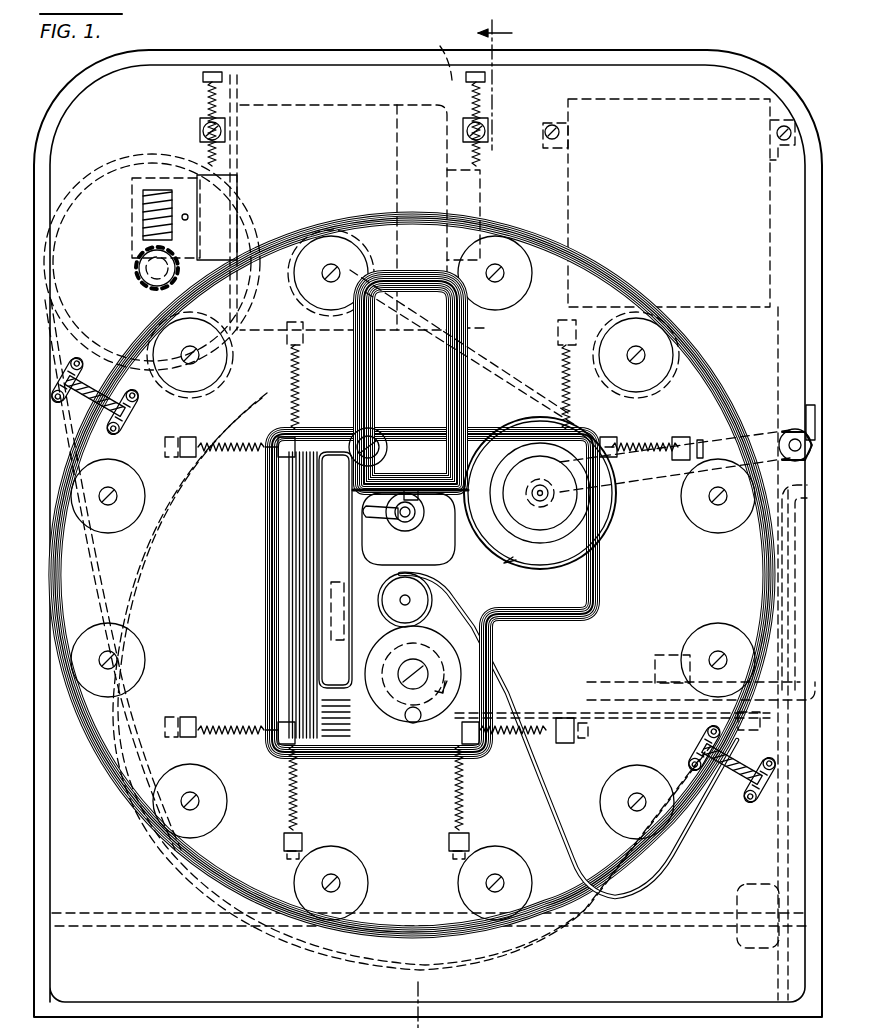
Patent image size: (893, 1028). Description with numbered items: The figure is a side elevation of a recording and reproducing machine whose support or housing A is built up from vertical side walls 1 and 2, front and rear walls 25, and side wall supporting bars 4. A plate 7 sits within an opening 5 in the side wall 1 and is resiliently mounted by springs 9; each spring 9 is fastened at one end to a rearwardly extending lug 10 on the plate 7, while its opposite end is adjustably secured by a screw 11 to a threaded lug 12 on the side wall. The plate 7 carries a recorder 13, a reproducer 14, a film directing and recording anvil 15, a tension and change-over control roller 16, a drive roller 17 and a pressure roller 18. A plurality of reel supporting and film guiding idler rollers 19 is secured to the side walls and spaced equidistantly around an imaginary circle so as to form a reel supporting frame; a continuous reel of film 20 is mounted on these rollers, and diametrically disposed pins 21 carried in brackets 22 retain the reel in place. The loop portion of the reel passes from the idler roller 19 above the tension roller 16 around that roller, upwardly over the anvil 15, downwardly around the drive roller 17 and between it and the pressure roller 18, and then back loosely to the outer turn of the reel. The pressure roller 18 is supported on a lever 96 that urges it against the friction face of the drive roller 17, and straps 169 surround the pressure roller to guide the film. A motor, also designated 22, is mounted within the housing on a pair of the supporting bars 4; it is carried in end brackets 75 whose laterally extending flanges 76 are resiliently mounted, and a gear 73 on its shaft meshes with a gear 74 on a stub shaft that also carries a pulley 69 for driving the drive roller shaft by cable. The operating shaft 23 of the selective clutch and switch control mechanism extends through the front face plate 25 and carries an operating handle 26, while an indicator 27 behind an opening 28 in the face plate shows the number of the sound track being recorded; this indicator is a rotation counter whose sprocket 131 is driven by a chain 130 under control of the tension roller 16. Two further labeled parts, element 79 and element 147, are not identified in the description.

The vertical side wall 1 is at (735, 92).
The screw 147 is at (770, 108).
The vertical side wall 2 is at (473, 524).
The side wall supporting bar 4 is at (203, 131).
The opening 5 is at (468, 340).
The plate 7 is at (540, 605).
The spring 9 is at (290, 382).
The rearwardly extending lug 10 is at (278, 436).
The screw 11 is at (468, 848).
The threaded lug 12 is at (470, 832).
The recorder 13 is at (384, 448).
The reproducer 14 is at (330, 604).
The film directing and recording anvil 15 is at (408, 529).
The tension and change-over control roller 16 is at (540, 555).
The drive roller 17 is at (455, 672).
The pressure roller 18 is at (430, 580).
The reel supporting and film guiding idler roller 19 is at (500, 290).
The film 20 is at (527, 250).
The pin 21 is at (98, 372).
The bracket 22 is at (334, 110).
The operating shaft 23 is at (650, 680).
The front wall 25 is at (48, 862).
The operating handle 26 is at (780, 545).
The indicator 27 is at (782, 432).
The opening 28 is at (808, 406).
The pulley 69 is at (106, 170).
The gear 73 is at (143, 204).
The gear 74 is at (130, 258).
The end bracket 75 is at (230, 100).
The laterally extending flange 76 is at (435, 51).
The anchor 79 is at (755, 729).
The lever 96 is at (543, 620).
The chain 130 is at (705, 440).
The sprocket 131 is at (775, 435).
The strap 169 is at (378, 575).